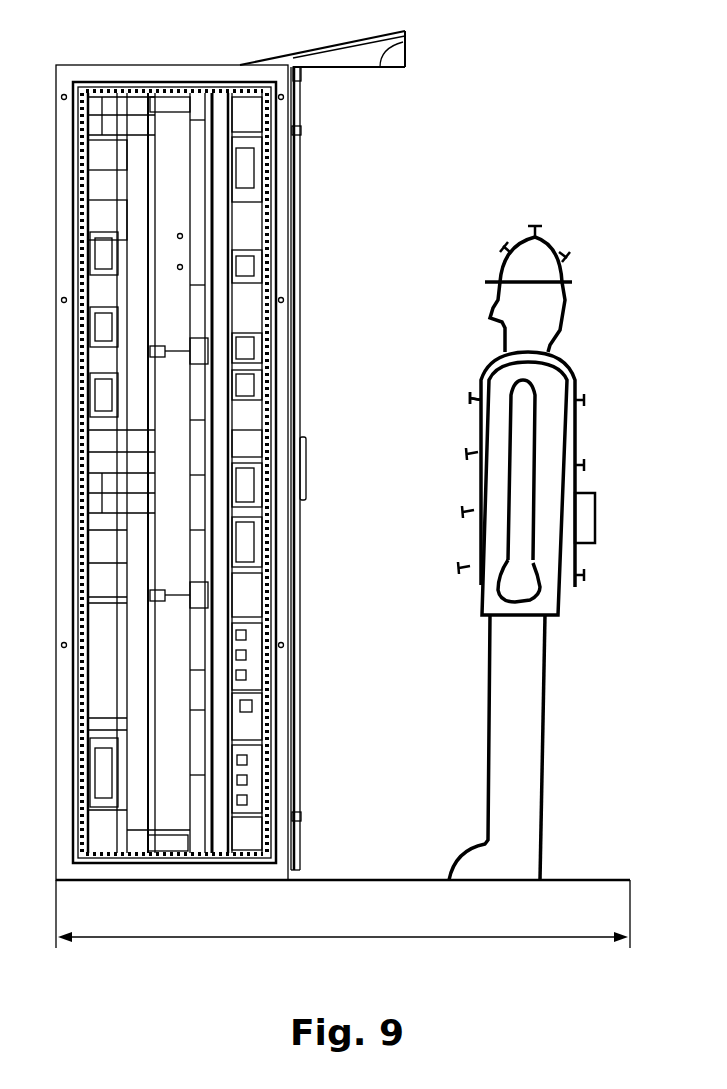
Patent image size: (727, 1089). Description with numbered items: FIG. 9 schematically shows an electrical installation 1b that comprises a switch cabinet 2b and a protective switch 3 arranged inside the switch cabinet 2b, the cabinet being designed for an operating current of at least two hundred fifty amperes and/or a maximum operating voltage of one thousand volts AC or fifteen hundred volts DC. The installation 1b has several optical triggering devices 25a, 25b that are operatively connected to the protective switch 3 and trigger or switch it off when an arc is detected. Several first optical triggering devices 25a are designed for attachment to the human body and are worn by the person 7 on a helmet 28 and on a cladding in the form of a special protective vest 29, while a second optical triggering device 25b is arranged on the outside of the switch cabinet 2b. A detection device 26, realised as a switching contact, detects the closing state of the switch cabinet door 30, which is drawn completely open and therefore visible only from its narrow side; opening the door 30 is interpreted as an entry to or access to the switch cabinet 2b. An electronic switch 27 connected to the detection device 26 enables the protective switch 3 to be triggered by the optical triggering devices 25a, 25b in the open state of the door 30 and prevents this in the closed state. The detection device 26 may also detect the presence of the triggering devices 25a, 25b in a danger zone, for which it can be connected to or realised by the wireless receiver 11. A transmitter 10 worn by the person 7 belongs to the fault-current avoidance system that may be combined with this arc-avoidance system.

The electrical installation 1b is at (580, 66).
The switch cabinet 2b is at (283, 283).
The protective switch 3 is at (253, 783).
The person 7 is at (550, 320).
The transmitter 10 is at (587, 522).
The wireless receiver 11 is at (248, 731).
The first optical triggering device 25a is at (470, 395).
The second optical triggering device 25b is at (405, 48).
The detection device 26 is at (302, 130).
The electronic switch 27 is at (248, 835).
The helmet 28 is at (540, 250).
The protective vest 29 is at (580, 437).
The switch cabinet door 30 is at (297, 193).